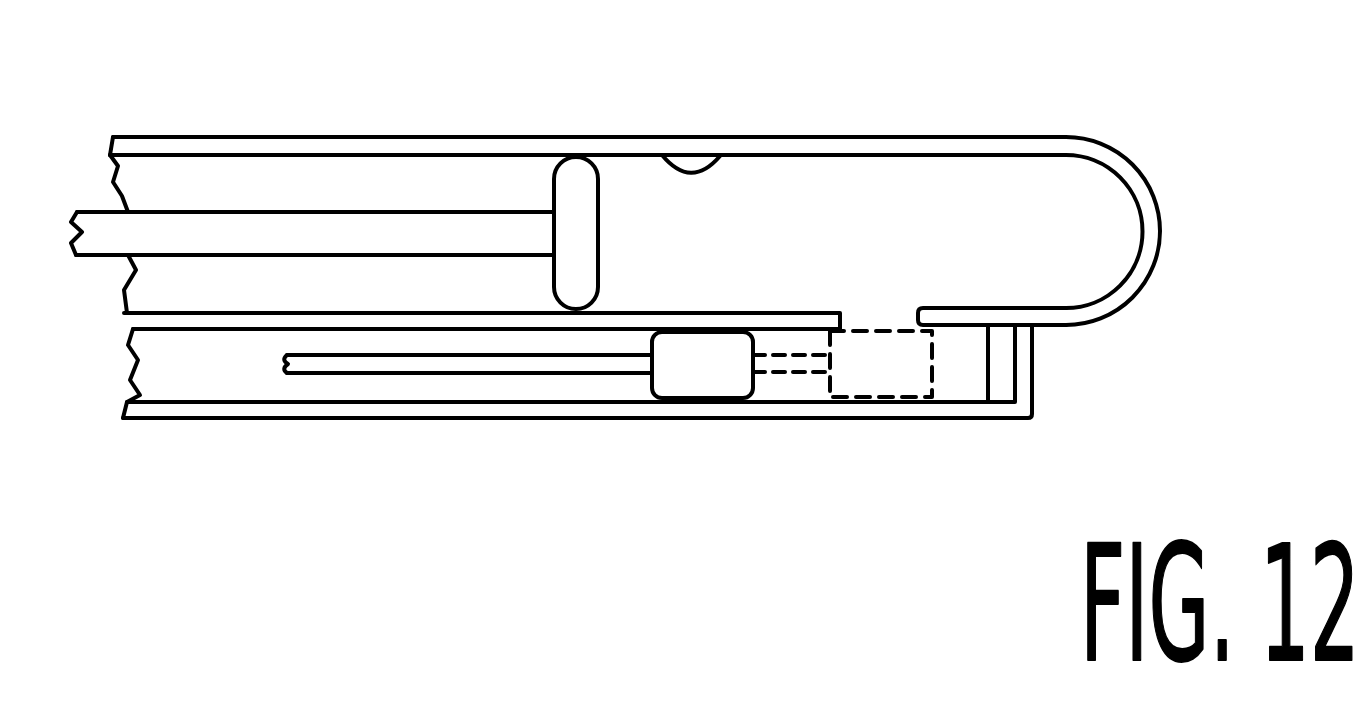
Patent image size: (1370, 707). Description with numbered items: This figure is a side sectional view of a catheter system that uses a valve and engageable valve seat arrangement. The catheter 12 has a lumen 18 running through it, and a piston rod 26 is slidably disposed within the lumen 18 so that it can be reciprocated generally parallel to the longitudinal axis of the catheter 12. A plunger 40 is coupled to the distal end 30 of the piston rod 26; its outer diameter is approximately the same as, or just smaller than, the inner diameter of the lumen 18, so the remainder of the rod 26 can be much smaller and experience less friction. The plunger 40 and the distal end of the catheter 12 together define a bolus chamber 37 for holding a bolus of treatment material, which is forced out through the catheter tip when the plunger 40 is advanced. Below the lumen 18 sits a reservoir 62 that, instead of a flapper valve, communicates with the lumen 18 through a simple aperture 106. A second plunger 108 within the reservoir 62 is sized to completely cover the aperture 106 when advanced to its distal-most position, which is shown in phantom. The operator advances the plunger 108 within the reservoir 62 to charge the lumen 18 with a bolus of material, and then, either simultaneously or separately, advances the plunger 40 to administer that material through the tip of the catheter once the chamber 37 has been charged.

The catheter 12 is at (396, 112).
The lumen 18 is at (720, 158).
The piston rod 26 is at (206, 190).
The distal end of rod 30 is at (498, 228).
The bolus chamber 37 is at (825, 192).
The plunger 40 is at (578, 190).
The reservoir 62 is at (792, 385).
The aperture 106 is at (905, 306).
The plunger 108 is at (703, 373).